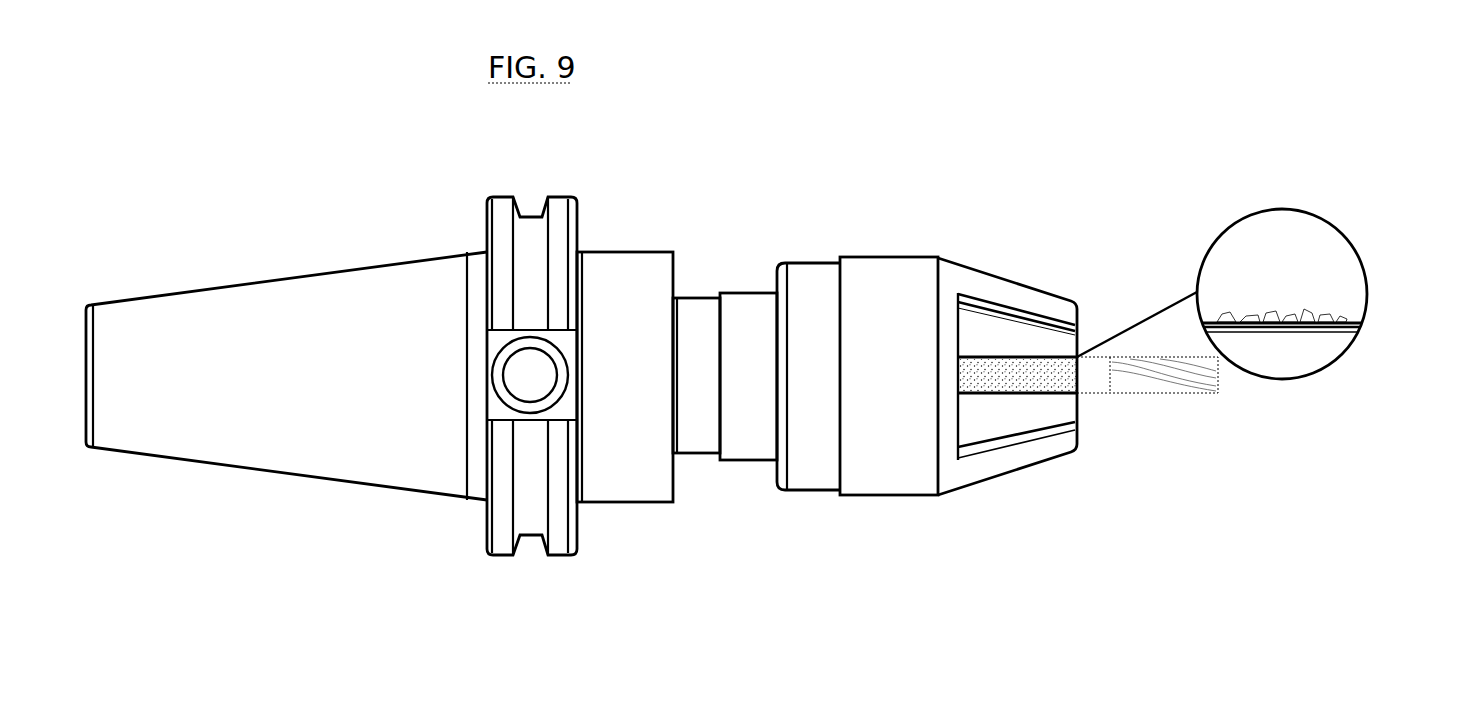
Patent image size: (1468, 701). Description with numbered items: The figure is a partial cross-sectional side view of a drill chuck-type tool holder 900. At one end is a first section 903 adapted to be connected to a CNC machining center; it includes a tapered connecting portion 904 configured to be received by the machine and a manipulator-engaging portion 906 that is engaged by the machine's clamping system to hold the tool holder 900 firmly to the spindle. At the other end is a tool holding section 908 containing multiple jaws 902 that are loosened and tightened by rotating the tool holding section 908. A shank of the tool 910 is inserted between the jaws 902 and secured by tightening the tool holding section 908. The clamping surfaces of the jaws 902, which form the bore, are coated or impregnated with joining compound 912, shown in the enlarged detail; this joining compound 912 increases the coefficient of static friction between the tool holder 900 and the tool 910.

The drill chuck-type tool holder 900 is at (627, 233).
The jaws 902 is at (1027, 412).
The first section 903 is at (575, 175).
The tapered connecting portion 904 is at (247, 333).
The manipulator-engaging portion 906 is at (573, 567).
The tool holding section 908 is at (1073, 243).
The tool 910 is at (1165, 383).
The joining compound 912 is at (1343, 317).